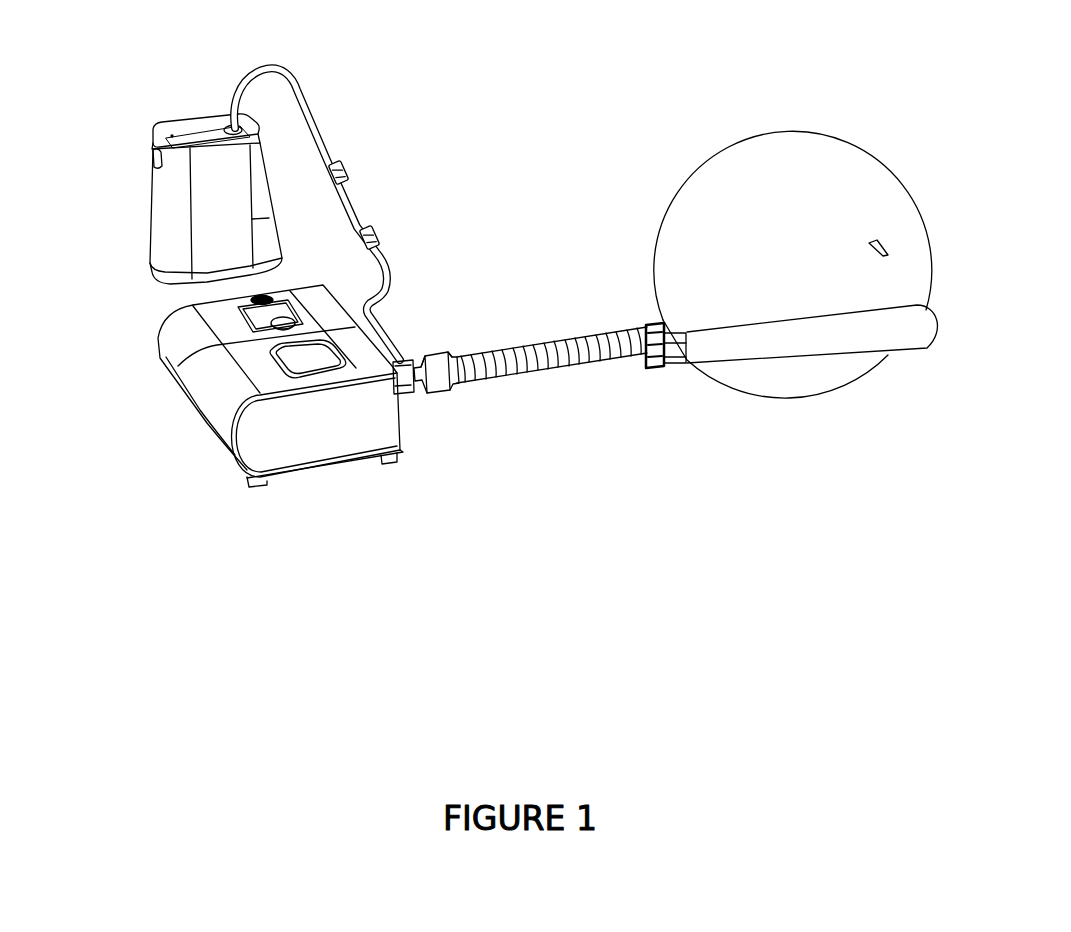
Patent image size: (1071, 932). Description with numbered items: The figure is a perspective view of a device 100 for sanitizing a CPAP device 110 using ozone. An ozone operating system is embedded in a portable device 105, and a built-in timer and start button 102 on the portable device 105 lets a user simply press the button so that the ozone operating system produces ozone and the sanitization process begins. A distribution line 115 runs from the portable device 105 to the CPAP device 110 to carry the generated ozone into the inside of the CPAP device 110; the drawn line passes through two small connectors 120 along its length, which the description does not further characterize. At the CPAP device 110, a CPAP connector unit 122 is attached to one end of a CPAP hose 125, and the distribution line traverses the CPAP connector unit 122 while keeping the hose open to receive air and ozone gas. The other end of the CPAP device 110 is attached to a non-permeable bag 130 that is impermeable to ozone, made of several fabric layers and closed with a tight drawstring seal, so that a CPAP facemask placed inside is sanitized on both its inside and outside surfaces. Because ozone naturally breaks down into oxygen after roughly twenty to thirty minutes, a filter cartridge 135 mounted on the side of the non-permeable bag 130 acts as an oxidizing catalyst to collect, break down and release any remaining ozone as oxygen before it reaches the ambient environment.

The device for sanitizing a CPAP device 100 is at (511, 542).
The built-in timer and start button 102 is at (152, 155).
The portable device 105 is at (164, 123).
The CPAP device 110 is at (203, 420).
The distribution line 115 is at (318, 113).
The cable connector 120 is at (358, 203).
The CPAP connector unit 122 is at (405, 392).
The CPAP hose 125 is at (490, 380).
The non-permeable bag 130 is at (780, 225).
The filter cartridge 135 is at (663, 370).